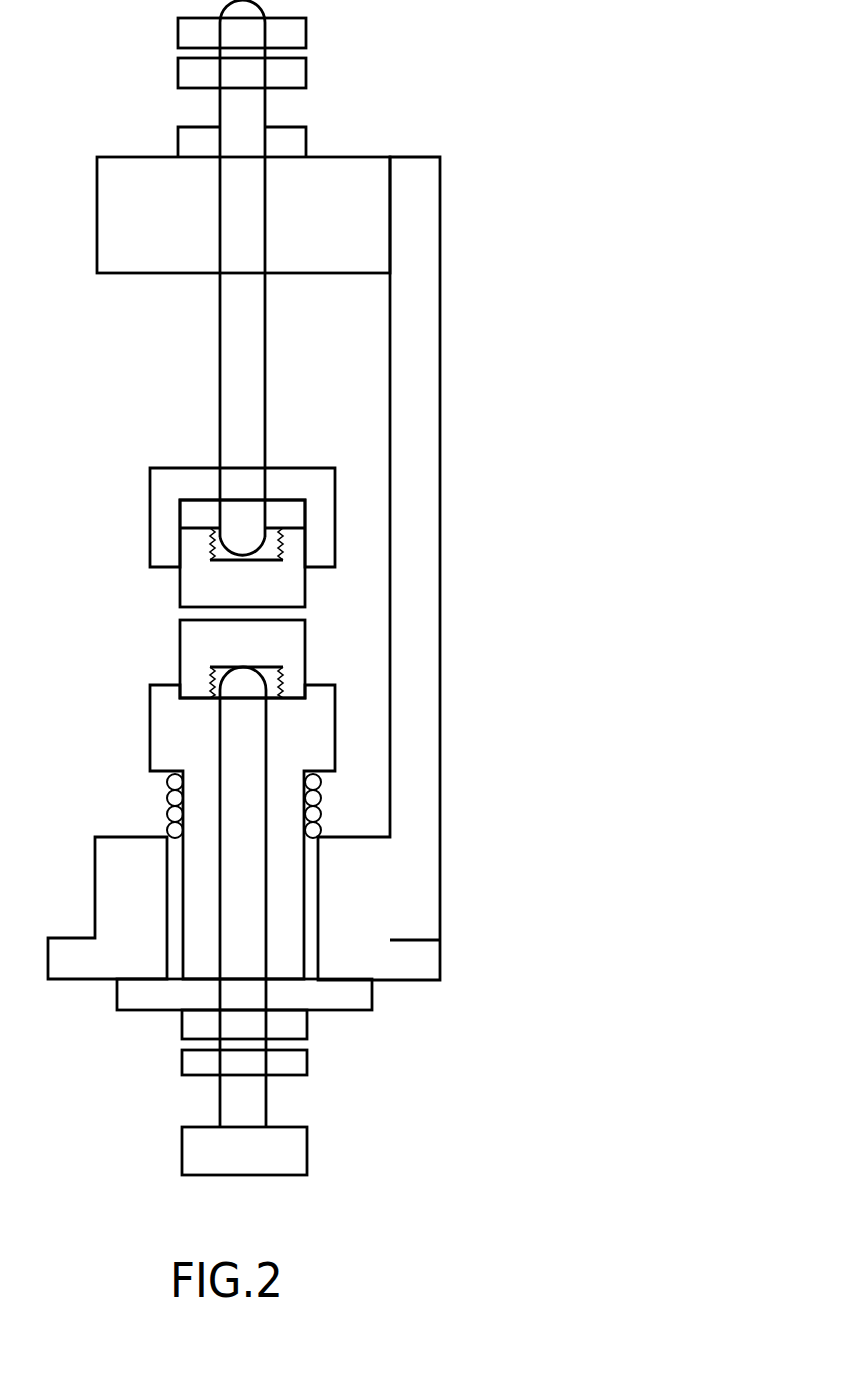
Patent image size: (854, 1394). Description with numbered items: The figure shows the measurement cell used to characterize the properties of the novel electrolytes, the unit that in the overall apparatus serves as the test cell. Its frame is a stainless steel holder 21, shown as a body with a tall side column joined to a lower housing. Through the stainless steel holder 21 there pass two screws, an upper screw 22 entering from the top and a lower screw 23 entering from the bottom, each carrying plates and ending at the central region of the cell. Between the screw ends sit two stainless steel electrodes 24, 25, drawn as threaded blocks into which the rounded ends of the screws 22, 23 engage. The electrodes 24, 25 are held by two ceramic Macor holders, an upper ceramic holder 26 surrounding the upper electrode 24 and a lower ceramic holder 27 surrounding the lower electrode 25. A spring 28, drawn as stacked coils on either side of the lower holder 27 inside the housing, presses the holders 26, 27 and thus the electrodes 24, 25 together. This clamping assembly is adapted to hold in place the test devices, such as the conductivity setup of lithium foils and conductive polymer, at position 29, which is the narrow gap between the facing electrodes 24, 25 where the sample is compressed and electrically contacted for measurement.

The s.s. holder 21 is at (410, 341).
The screw 22 is at (240, 110).
The screw 23 is at (255, 1098).
The s.s. electrode 24 is at (282, 583).
The s.s. electrode 25 is at (282, 645).
The ceramic (Macor) holder 26 is at (172, 485).
The ceramic (Macor) holder 27 is at (180, 730).
The spring 28 is at (330, 808).
The position 29 is at (200, 612).